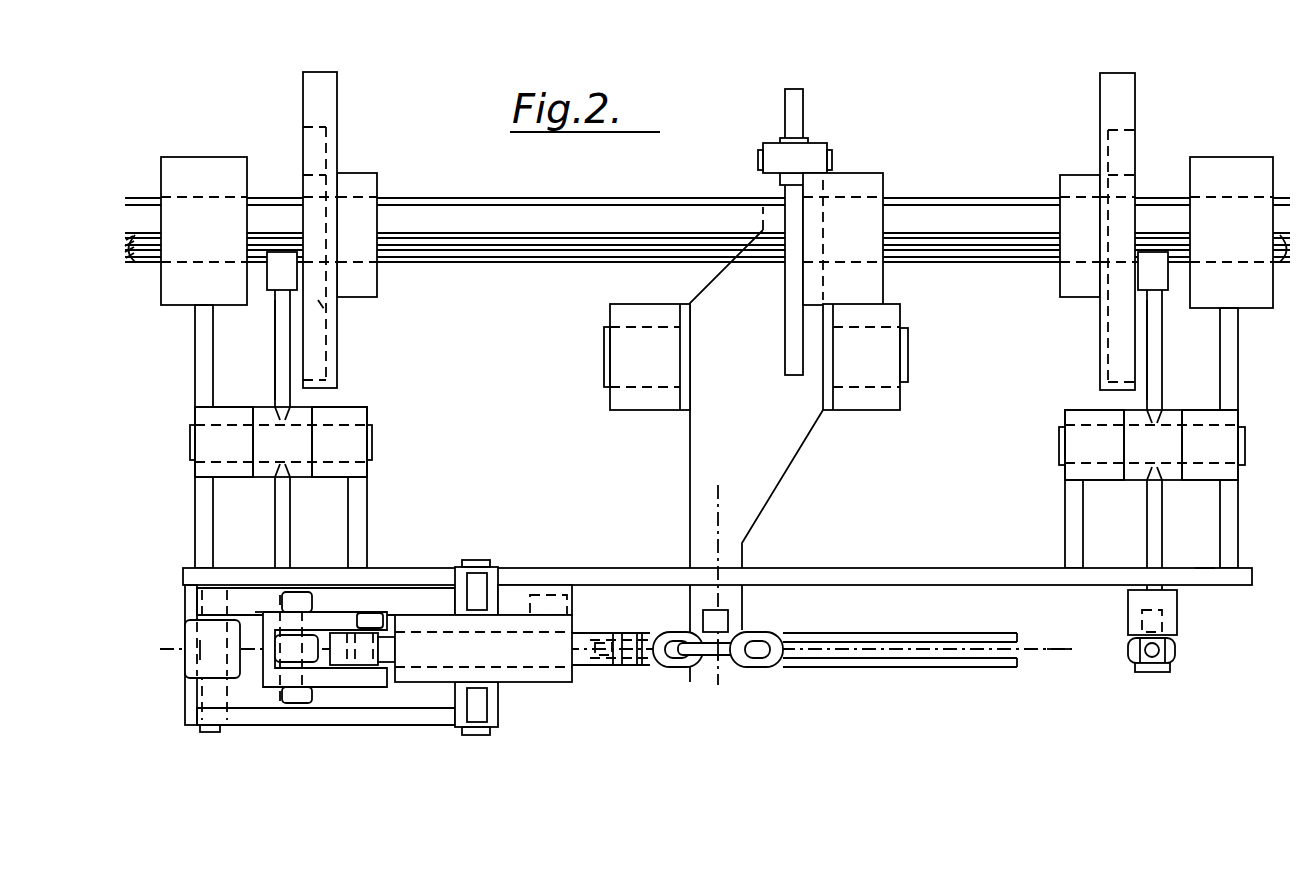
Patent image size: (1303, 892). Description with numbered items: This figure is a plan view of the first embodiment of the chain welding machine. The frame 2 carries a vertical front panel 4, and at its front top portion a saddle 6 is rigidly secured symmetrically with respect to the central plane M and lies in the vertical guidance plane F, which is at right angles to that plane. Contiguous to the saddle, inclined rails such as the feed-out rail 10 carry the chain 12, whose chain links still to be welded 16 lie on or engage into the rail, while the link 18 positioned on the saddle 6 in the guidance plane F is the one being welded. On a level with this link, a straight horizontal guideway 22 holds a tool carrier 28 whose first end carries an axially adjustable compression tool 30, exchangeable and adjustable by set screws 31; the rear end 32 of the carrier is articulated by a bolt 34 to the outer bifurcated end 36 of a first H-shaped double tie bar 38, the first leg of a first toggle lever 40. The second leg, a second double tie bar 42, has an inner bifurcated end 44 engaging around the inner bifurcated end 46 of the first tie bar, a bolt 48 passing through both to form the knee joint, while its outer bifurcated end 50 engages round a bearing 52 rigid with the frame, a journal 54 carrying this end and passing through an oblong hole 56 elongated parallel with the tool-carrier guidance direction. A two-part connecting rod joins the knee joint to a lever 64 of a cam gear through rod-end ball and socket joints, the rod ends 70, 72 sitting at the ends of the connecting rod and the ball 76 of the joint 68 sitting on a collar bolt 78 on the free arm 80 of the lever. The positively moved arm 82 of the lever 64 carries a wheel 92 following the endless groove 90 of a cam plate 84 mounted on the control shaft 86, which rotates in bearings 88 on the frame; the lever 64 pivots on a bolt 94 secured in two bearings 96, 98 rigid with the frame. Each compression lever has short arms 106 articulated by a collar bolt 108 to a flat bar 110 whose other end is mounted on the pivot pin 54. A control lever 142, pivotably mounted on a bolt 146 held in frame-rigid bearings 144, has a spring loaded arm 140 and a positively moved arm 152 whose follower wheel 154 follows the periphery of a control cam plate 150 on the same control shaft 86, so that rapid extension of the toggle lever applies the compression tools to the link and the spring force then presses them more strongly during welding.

The frame 2 is at (1207, 562).
The vertical front panel 4 is at (836, 573).
The saddle 6 is at (718, 668).
The rail 10 is at (865, 668).
The chain 12 is at (670, 630).
The chain links still to be welded 16 is at (675, 668).
The chain link 18 is at (728, 670).
The straight horizontal guideway 22 is at (535, 668).
The tool carrier 28 is at (586, 632).
The compression tool 30 is at (662, 668).
The set screws 31 is at (638, 668).
The rear end of the tool carrier 32 is at (395, 692).
The bolt 34 is at (405, 590).
The outer bifurcated end of the first double tie bar 36 is at (373, 632).
The first H-shaped double tie bar 38 is at (360, 690).
The first toggle lever 40 is at (324, 610).
The second H-shaped double tie bar 42 is at (253, 708).
The inner bifurcated end of the second double tie bar 44 is at (315, 688).
The inner bifurcated end of the first double tie bar 46 is at (284, 700).
The bolt 48 is at (295, 697).
The outer bifurcated end of the second double tie bar 50 is at (200, 695).
The bearing 52 is at (190, 637).
The journal 54 is at (197, 722).
The oblong hole 56 is at (200, 652).
The lever of the cam gear 64 is at (266, 406).
The rod-end ball and socket joint 68 is at (1128, 665).
The rod end 70 is at (258, 625).
The rod end 72 is at (1163, 672).
The ball 76 is at (1165, 633).
The collar bolt 78 is at (1152, 672).
The free arm 80 is at (280, 518).
The positively moved arm 82 is at (279, 335).
The cam plate 84 is at (327, 117).
The control shaft 86 is at (447, 205).
The bearings 88 is at (203, 165).
The endless groove 90 is at (311, 138).
The wheel 92 is at (318, 305).
The bolt 94 is at (372, 441).
The bearing 96 is at (208, 413).
The bearing 98 is at (343, 410).
The short arms 106 is at (500, 595).
The collar bolt 108 is at (476, 580).
The flat bar 110 is at (383, 580).
The spring loaded arm 140 is at (728, 600).
The control lever 142 is at (808, 448).
The bearings 144 is at (655, 407).
The bolt 146 is at (908, 355).
The control cam plate 150 is at (806, 101).
The positively moved arm 152 is at (768, 183).
The follower wheel 154 is at (800, 140).
The central plane M is at (720, 515).
The guidance plane F is at (1050, 649).